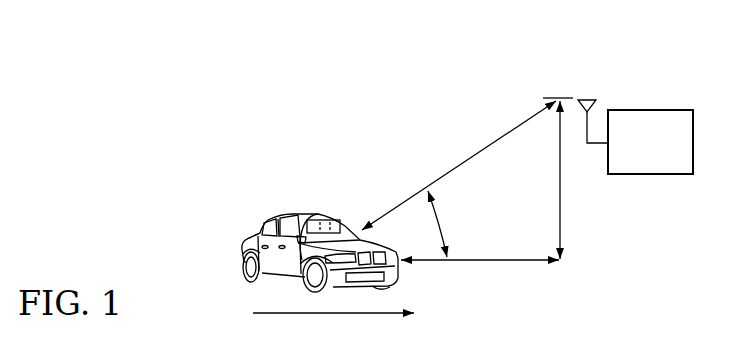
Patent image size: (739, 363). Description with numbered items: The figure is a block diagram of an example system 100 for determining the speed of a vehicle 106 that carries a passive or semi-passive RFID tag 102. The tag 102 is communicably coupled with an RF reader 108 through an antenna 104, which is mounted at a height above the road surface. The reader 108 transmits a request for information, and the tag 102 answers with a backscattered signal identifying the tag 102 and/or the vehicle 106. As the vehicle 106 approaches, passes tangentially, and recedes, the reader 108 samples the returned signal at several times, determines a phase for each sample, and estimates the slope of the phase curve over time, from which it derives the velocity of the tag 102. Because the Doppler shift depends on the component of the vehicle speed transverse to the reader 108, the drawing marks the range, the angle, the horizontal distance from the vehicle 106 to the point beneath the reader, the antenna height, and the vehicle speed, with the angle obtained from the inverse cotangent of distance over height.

The system 100 is at (364, 121).
The tag 102 is at (312, 213).
The antenna 104 is at (593, 98).
The vehicle 106 is at (242, 243).
The RF reader 108 is at (668, 156).